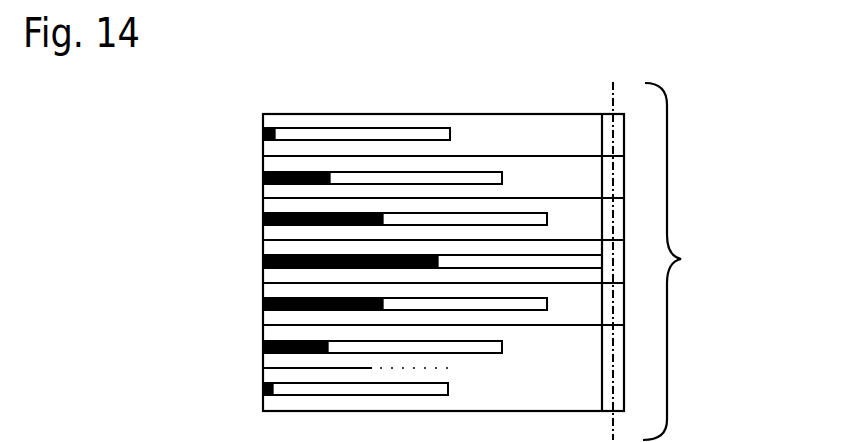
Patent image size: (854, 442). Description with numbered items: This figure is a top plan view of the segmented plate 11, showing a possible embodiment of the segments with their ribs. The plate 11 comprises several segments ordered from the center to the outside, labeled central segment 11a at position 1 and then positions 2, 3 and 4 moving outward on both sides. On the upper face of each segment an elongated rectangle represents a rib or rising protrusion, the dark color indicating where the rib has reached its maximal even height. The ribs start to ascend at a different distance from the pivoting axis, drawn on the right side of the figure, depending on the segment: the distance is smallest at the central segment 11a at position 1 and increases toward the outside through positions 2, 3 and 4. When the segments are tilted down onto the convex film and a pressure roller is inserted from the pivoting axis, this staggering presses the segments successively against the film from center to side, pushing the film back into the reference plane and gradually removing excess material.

The plate 11 is at (681, 259).
The central segment 11a is at (273, 273).
The central segment position 1 is at (354, 335).
The second segment position 2 is at (385, 269).
The third segment position 3 is at (362, 270).
The outermost segment position 4 is at (336, 269).